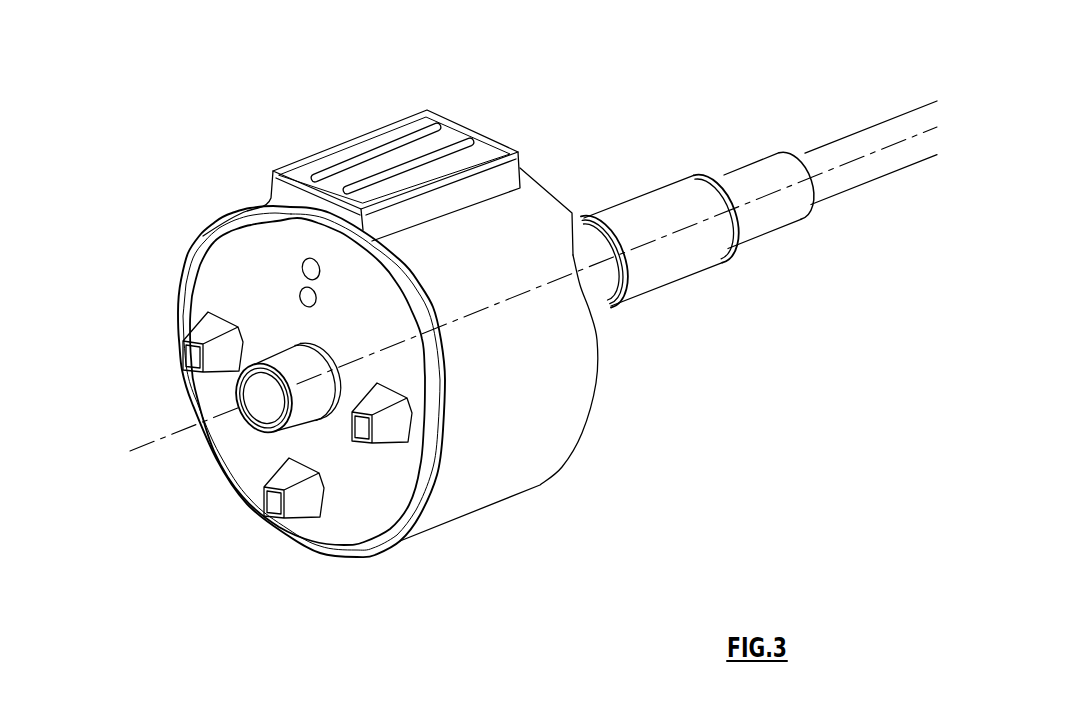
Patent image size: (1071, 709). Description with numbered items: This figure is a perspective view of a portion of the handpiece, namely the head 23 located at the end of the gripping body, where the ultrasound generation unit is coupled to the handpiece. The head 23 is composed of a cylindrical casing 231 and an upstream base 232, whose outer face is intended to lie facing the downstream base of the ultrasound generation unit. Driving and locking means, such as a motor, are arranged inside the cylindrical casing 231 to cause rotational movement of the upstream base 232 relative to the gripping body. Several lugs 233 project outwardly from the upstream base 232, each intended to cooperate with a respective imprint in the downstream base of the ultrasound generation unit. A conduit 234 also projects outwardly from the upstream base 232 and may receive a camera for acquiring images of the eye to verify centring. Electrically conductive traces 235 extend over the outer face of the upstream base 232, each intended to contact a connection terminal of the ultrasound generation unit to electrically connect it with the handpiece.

The head 23 is at (485, 326).
The cylindrical casing 231 is at (531, 253).
The upstream base 232 is at (243, 253).
The lug 233 is at (365, 437).
The conduit 234 is at (283, 357).
The electrically conductive trace 235 is at (306, 303).